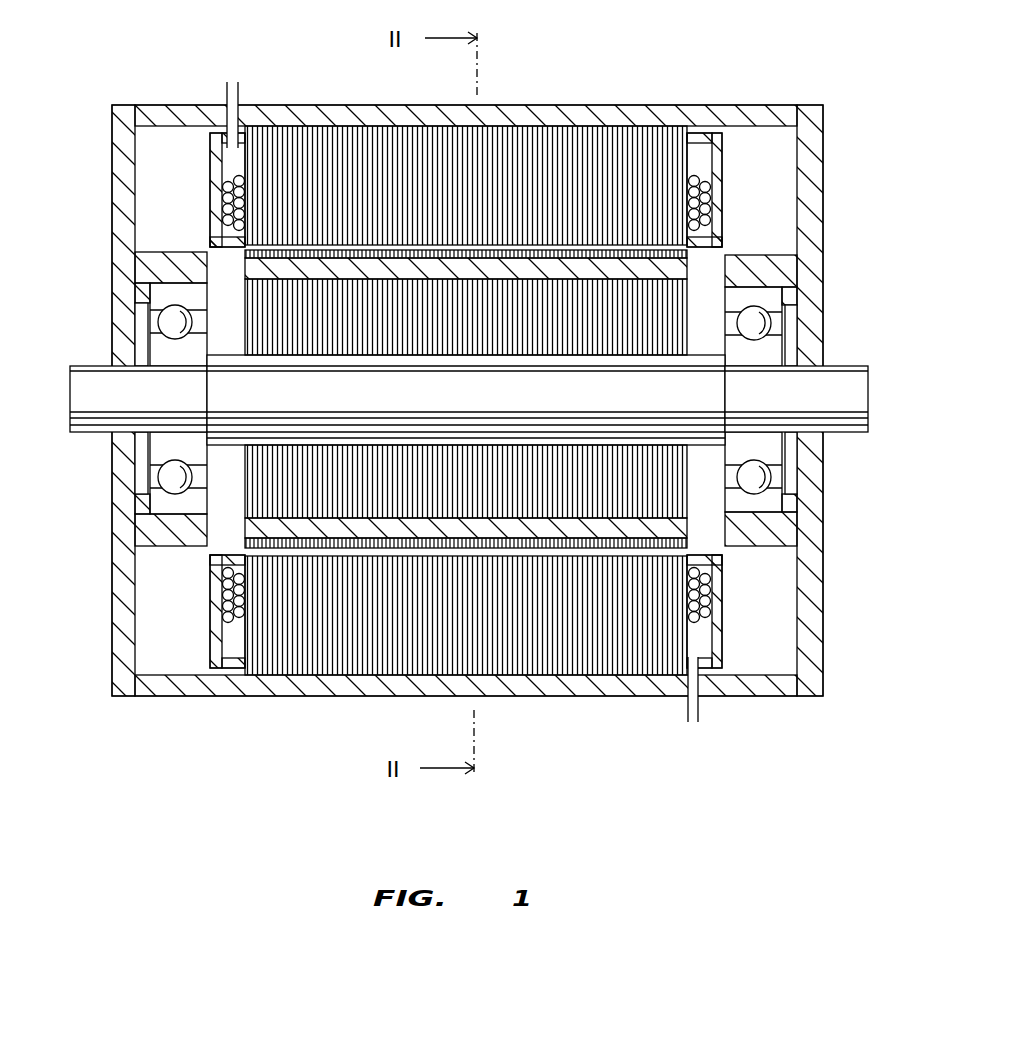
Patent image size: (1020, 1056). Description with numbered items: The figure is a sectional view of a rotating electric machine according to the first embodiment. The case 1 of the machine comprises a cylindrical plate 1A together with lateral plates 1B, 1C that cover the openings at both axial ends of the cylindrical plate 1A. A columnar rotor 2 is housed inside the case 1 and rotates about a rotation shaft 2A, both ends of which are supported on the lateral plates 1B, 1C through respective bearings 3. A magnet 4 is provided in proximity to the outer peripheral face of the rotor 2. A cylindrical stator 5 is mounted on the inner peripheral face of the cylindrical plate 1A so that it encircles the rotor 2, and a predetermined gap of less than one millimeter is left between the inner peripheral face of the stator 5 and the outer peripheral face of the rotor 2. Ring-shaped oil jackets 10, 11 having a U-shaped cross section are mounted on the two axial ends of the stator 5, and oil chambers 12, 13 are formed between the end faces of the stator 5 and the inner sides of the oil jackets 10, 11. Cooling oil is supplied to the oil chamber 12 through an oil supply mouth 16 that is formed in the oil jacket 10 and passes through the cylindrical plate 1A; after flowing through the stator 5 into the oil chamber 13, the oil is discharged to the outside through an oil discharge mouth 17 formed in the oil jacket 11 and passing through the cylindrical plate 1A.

The case 1 is at (535, 95).
The cylindrical plate 1A is at (640, 105).
The lateral plate 1B is at (120, 227).
The lateral plate 1C is at (812, 178).
The rotor 2 is at (240, 290).
The rotation shaft 2A is at (848, 367).
The bearing 3 is at (163, 447).
The magnet 4 is at (183, 282).
The stator 5 is at (372, 150).
The oil jacket 10 is at (212, 156).
The oil jacket 11 is at (722, 165).
The oil chamber 12 is at (212, 137).
The oil chamber 13 is at (698, 153).
The oil supply mouth 16 is at (238, 93).
The oil discharge mouth 17 is at (688, 718).